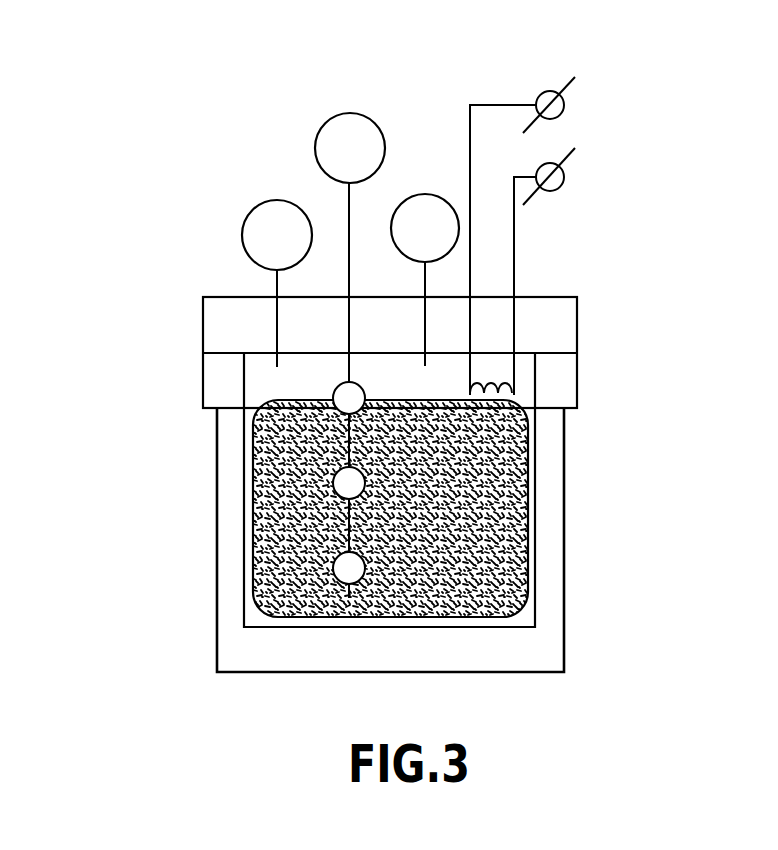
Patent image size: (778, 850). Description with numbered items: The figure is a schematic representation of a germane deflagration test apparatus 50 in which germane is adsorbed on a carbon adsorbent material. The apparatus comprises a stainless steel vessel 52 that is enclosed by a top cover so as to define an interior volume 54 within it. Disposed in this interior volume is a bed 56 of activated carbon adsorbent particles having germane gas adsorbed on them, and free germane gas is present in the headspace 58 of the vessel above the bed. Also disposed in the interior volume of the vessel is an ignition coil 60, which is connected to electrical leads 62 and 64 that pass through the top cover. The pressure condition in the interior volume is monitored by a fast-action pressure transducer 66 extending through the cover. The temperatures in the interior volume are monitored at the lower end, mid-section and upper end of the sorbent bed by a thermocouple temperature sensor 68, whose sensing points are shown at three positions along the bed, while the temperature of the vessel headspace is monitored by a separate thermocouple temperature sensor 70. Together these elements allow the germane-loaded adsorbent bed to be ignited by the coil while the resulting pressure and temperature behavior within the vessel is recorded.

The deflagration test apparatus 50 is at (140, 50).
The stainless steel vessel 52 is at (565, 607).
The interior volume 54 is at (253, 617).
The bed of activated carbon adsorbent particles 56 is at (507, 543).
The headspace 58 is at (262, 395).
The ignition coil 60 is at (490, 385).
The electrical lead 62 is at (514, 242).
The electrical lead 64 is at (490, 105).
The fast-action pressure transducer 66 is at (253, 207).
The thermocouple temperature sensor 68 is at (337, 115).
The thermocouple temperature sensor 70 is at (425, 193).